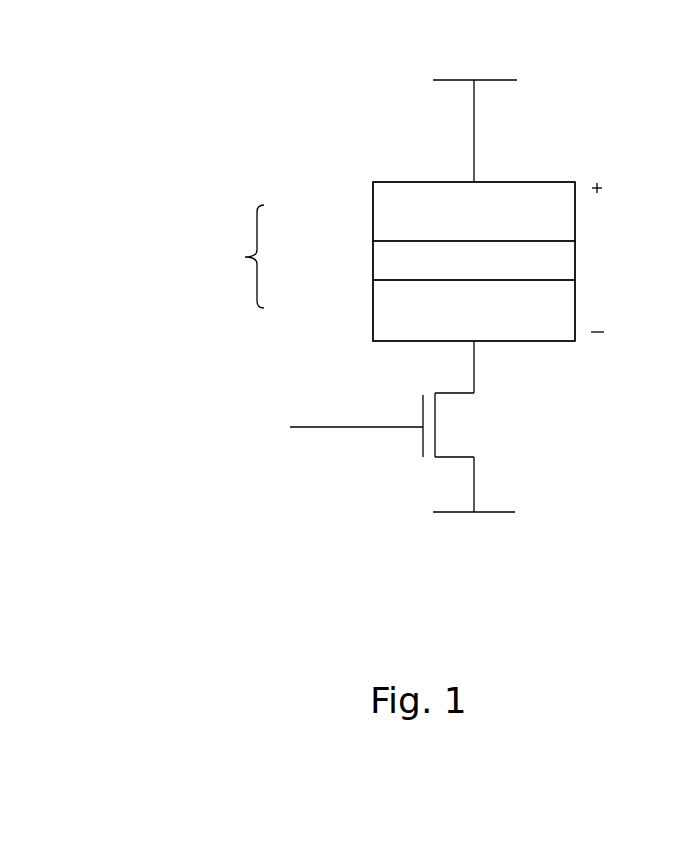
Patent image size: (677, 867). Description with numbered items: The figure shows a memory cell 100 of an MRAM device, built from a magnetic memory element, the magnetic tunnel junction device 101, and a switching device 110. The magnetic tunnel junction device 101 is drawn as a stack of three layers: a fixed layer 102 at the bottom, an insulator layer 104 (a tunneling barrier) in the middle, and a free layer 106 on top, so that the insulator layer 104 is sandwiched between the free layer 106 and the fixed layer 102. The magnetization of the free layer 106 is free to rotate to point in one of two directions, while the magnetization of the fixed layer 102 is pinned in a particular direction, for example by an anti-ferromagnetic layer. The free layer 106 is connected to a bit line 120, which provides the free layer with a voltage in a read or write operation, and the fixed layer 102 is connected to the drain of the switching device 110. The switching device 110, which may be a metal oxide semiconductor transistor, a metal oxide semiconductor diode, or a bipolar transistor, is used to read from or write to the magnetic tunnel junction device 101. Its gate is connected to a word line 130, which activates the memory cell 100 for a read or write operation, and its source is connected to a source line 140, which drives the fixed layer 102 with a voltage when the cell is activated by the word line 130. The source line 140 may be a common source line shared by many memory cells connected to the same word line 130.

The memory cell 100 is at (95, 44).
The MTJ device 101 is at (328, 261).
The fixed layer 102 is at (373, 307).
The insulator layer 104 is at (373, 257).
The free layer 106 is at (373, 207).
The switching device 110 is at (408, 455).
The bit line 120 is at (505, 57).
The word line 130 is at (260, 405).
The source line 140 is at (503, 540).